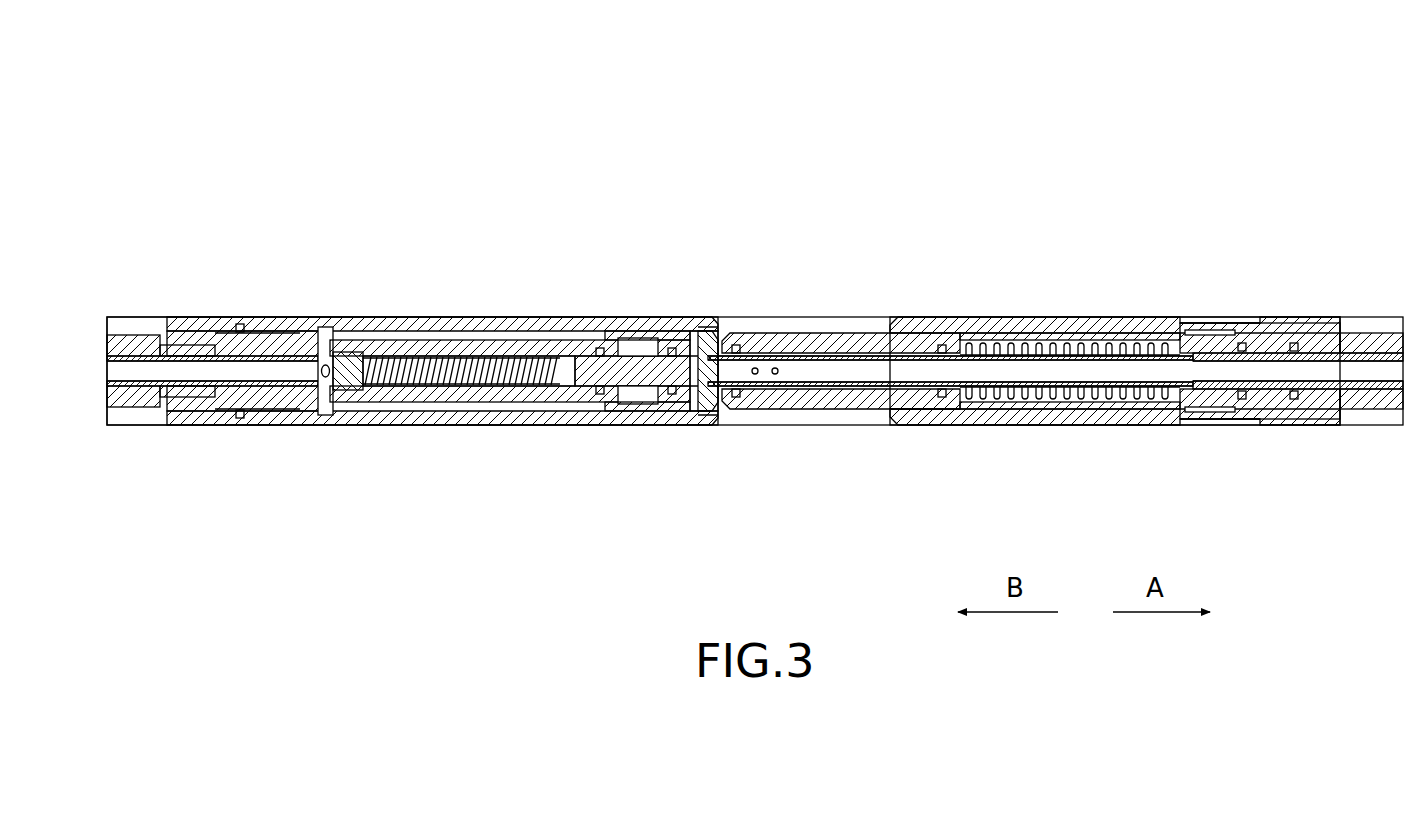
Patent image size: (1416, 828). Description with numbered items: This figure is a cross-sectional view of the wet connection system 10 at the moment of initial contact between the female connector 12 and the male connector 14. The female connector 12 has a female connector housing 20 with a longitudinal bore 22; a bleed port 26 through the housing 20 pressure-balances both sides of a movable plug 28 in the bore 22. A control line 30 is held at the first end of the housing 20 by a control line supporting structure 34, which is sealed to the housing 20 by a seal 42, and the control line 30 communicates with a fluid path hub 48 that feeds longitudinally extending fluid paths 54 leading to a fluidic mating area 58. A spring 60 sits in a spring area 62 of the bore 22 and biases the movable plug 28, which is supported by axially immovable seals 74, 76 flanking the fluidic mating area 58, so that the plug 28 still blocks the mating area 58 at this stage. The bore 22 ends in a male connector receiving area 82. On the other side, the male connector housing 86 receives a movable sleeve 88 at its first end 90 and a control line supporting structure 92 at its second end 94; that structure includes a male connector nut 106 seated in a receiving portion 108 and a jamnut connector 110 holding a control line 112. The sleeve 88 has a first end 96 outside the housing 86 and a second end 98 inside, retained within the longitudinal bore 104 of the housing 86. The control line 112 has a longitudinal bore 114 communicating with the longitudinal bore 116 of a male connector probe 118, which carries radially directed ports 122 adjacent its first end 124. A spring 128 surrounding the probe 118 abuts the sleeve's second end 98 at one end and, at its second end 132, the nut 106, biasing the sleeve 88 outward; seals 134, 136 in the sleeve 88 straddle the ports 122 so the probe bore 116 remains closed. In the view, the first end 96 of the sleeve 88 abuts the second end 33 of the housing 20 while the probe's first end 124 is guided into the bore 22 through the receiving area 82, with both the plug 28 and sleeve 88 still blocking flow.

The wet connection system 10 is at (392, 146).
The female connector 12 is at (546, 314).
The male connector 14 is at (1062, 311).
The female connector housing 20 is at (455, 322).
The longitudinal bore 22 is at (553, 402).
The bleed port 26 is at (392, 390).
The movable plug 28 is at (632, 386).
The control line 30 is at (145, 368).
The second end 33 is at (724, 332).
The control line supporting structure 34 is at (213, 424).
The seal 42 is at (240, 324).
The fluid path hub 48 is at (325, 415).
The longitudinally extending fluid paths 54 is at (492, 331).
The fluidic mating area 58 is at (640, 338).
The spring 60 is at (420, 356).
The spring area 62 is at (440, 386).
The seal 74 is at (600, 348).
The seal 76 is at (672, 348).
The male connector receiving area 82 is at (705, 411).
The male connector housing 86 is at (1075, 425).
The movable sleeve 88 is at (832, 333).
The first end 90 is at (900, 412).
The control line supporting structure 92 is at (1282, 419).
The second end 94 is at (1252, 333).
The first end 96 is at (736, 397).
The second end 98 is at (946, 345).
The longitudinal bore 104 is at (1043, 345).
The male connector nut 106 is at (1270, 413).
The control line supporting structure receiving portion 108 is at (1200, 323).
The jamnut connector 110 is at (1375, 333).
The control line 112 is at (1247, 399).
The longitudinal bore 114 is at (1348, 382).
The longitudinal bore 116 is at (862, 386).
The male connector probe 118 is at (830, 382).
The ports 122 is at (775, 368).
The first end 124 is at (705, 327).
The spring 128 is at (1028, 397).
The second end 132 is at (1185, 332).
The seal 134 is at (757, 374).
The seal 136 is at (940, 345).